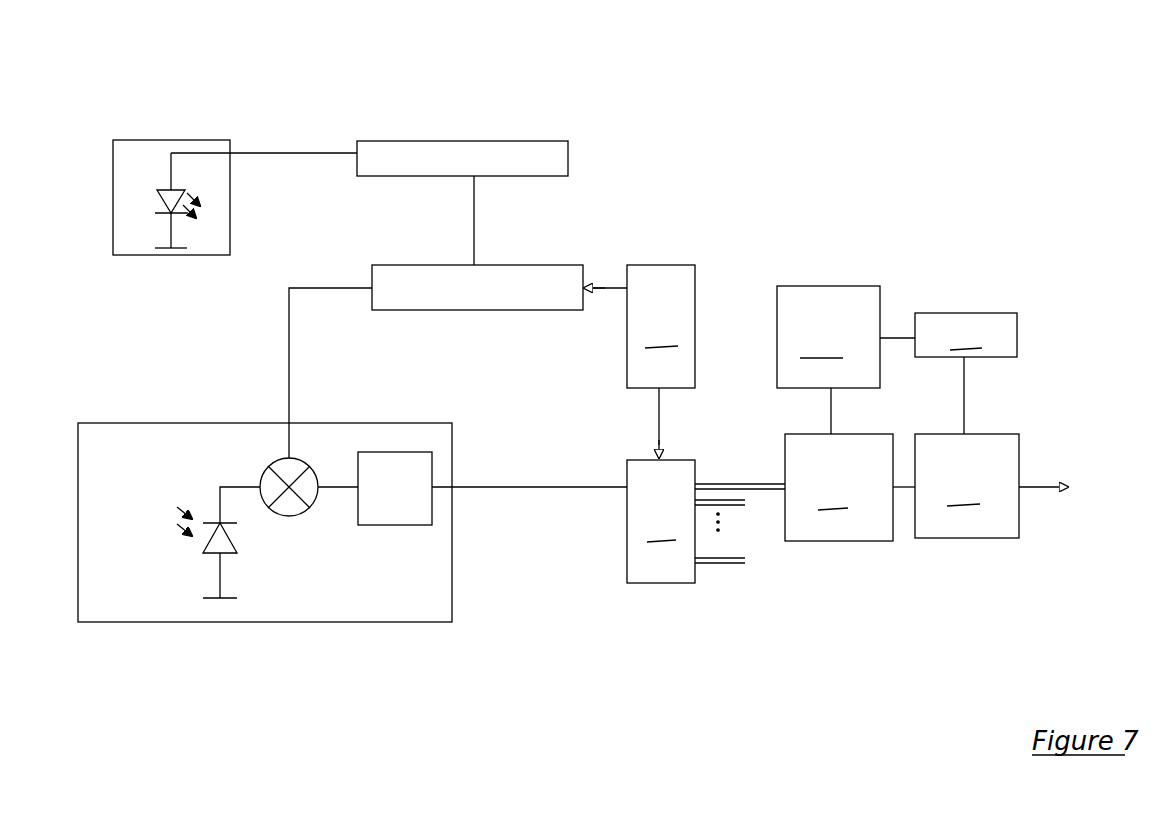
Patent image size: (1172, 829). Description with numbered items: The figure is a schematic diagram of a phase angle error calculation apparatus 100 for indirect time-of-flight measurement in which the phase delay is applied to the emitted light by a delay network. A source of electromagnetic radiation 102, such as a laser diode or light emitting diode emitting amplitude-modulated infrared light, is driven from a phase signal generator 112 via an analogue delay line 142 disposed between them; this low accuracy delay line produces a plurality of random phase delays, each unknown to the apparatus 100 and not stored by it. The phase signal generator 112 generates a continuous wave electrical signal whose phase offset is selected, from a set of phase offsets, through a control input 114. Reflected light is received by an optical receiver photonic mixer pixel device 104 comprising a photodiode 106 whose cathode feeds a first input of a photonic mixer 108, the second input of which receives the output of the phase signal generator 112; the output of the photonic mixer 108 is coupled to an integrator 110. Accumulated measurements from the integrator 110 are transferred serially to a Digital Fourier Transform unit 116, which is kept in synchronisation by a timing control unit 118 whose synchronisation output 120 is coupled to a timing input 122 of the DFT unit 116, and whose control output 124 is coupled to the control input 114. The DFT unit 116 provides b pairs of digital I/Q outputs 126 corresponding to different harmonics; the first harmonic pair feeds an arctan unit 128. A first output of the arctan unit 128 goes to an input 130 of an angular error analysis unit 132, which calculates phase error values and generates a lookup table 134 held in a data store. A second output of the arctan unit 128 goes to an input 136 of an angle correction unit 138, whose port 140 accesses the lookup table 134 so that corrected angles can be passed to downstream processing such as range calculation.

The phase angle error calculation apparatus 100 is at (100, 100).
The source of electromagnetic radiation 102 is at (199, 140).
The optical receiver photonic mixer pixel device 104 is at (108, 622).
The photodiode 106 is at (206, 556).
The photonic mixer 108 is at (290, 516).
The integrator 110 is at (406, 525).
The phase signal generator 112 is at (398, 265).
The control input 114 is at (590, 292).
The Digital Fourier Transform unit 116 is at (661, 521).
The timing control unit 118 is at (661, 326).
The synchronisation output 120 is at (652, 396).
The timing input 122 is at (666, 460).
The control output 124 is at (627, 283).
The digital I/Q outputs 126 is at (728, 582).
The arctan unit 128 is at (839, 487).
The input of angular error analysis unit 130 is at (834, 396).
The angular error analysis unit 132 is at (828, 337).
The lookup table 134 is at (948, 335).
The input of angle correction unit 136 is at (912, 490).
The angle correction unit 138 is at (991, 486).
The port 140 is at (966, 432).
The analogue delay line 142 is at (489, 141).